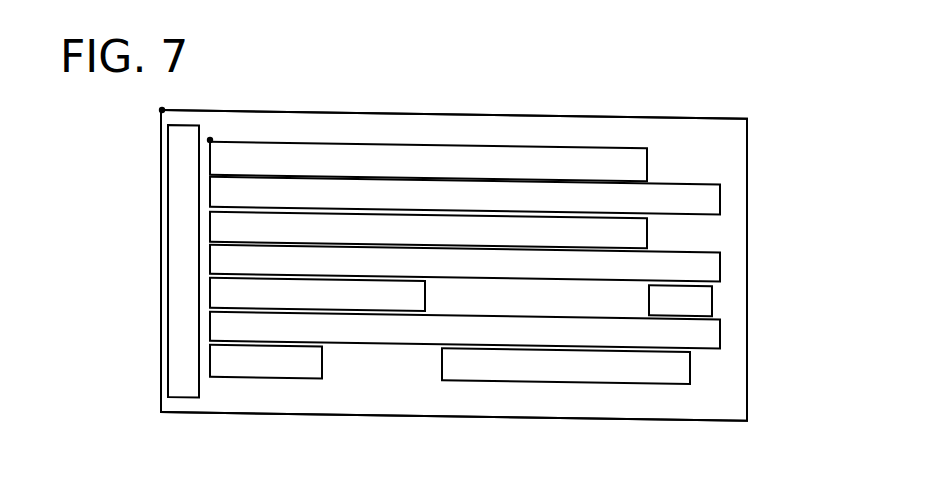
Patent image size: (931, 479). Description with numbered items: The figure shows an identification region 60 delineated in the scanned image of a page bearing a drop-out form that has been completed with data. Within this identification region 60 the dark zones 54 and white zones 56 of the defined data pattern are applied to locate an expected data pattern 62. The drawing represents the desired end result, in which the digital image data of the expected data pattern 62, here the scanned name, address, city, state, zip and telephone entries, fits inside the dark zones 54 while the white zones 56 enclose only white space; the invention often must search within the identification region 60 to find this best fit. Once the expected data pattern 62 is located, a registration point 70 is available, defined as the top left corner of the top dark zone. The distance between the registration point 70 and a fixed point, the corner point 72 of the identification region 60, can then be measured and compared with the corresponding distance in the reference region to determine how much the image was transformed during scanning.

The dark zones 54 is at (413, 152).
The white zones 56 is at (182, 223).
The identification region 60 is at (756, 366).
The expected data pattern 62 is at (717, 408).
The registration point 70 is at (210, 138).
The corner point 72 is at (161, 109).